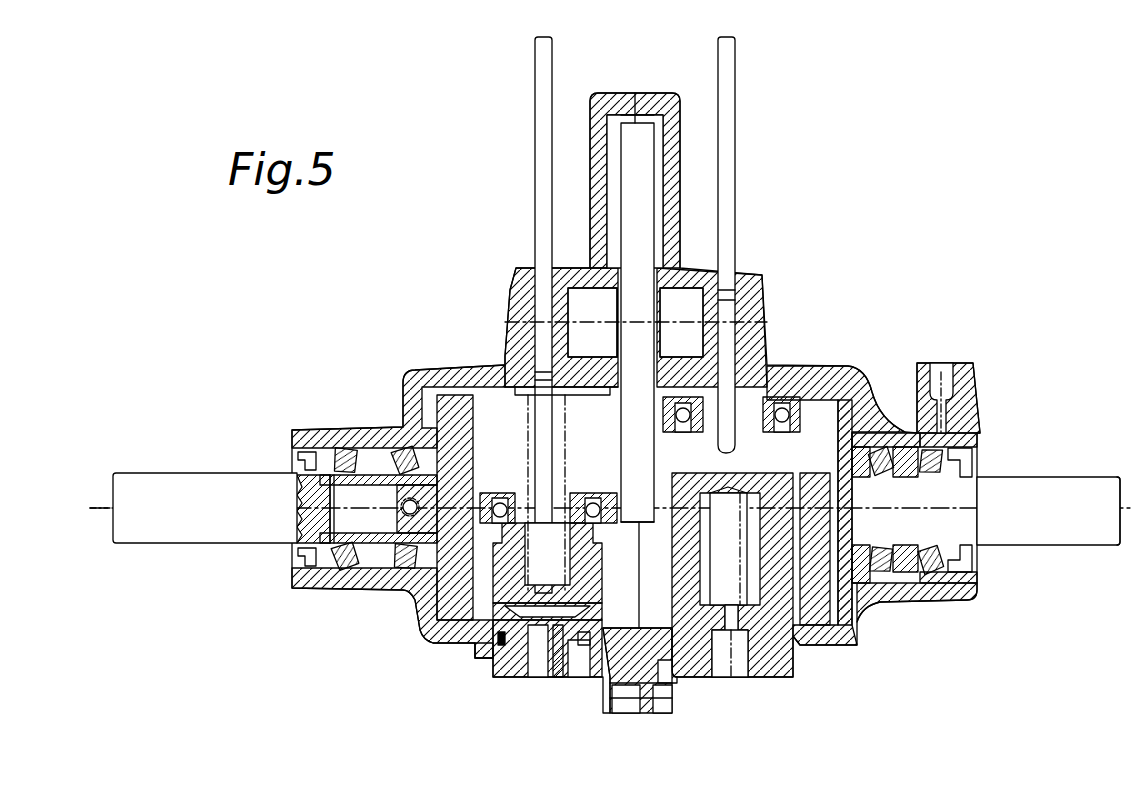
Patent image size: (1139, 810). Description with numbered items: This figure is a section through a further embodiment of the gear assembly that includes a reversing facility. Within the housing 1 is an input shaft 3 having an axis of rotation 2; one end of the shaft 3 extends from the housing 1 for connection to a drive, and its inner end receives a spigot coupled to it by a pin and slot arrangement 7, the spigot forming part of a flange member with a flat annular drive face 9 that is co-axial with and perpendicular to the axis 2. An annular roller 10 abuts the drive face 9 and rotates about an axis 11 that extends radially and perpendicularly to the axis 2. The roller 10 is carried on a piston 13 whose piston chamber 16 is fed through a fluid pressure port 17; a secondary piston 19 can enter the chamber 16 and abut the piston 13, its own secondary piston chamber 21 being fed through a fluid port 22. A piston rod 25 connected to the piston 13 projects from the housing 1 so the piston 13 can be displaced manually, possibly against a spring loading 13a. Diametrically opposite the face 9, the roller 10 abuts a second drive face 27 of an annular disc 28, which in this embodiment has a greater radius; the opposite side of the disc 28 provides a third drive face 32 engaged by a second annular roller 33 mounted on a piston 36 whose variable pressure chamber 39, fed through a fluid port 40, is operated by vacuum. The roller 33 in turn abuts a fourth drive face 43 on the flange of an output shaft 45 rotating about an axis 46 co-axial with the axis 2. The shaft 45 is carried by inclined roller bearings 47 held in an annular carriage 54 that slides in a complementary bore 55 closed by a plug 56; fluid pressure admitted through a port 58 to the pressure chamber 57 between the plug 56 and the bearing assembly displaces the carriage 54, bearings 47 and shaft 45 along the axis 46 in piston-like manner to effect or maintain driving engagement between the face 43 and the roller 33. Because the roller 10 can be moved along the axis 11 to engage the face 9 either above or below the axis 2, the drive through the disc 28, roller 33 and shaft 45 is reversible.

The housing 1 is at (436, 366).
The axis of rotation 2 is at (104, 515).
The input shaft 3 is at (182, 478).
The pin and slot arrangement 7 is at (403, 505).
The drive face 9 is at (470, 598).
The annular roller 10 is at (495, 493).
The axis 11 is at (527, 380).
The piston 13 is at (584, 561).
The spring loading 13a is at (480, 650).
The piston chamber 16 is at (590, 612).
The fluid pressure port 17 is at (584, 690).
The secondary piston 19 is at (492, 668).
The secondary piston chamber 21 is at (562, 690).
The fluid port 22 is at (540, 679).
The piston rod 25 is at (540, 130).
The second drive face 27 is at (620, 450).
The annular disc 28 is at (648, 446).
The third drive face 32 is at (658, 528).
The second annular roller 33 is at (672, 430).
The piston 36 is at (772, 530).
The variable pressure chamber 39 is at (706, 592).
The fluid port 40 is at (727, 677).
The fourth drive face 43 is at (800, 632).
The output shaft 45 is at (1028, 547).
The axis 46 is at (1085, 547).
The inclined roller bearings 47 is at (882, 472).
The annular carriage 54 is at (872, 440).
The bore 55 is at (906, 442).
The plug 56 is at (962, 462).
The pressure chamber 57 is at (975, 585).
The port 58 is at (940, 372).